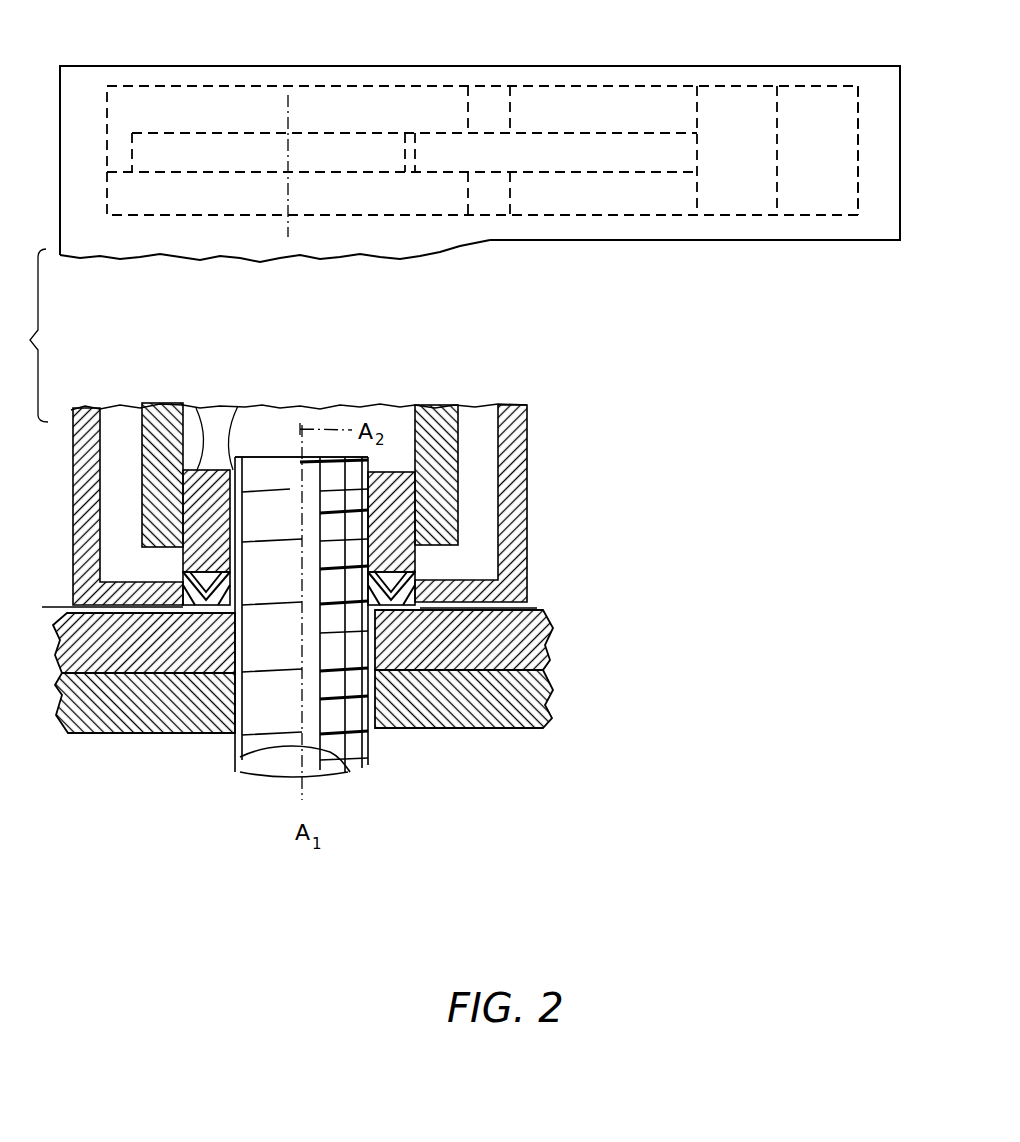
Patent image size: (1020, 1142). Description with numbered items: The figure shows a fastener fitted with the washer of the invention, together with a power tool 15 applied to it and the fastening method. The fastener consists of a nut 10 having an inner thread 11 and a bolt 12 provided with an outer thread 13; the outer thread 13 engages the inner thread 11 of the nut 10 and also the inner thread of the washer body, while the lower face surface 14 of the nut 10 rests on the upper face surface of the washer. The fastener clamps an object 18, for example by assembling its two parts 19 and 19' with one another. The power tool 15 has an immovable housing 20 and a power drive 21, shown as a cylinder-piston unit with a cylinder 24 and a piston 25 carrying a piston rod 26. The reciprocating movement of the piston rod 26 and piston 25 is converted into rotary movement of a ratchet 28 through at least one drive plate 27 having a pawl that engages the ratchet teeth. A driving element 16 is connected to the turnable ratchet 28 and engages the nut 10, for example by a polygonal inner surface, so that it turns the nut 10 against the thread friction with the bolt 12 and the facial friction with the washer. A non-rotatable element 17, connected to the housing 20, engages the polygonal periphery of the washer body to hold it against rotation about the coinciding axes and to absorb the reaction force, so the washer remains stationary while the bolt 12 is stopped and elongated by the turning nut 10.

The nut 10 is at (193, 406).
The inner thread 11 is at (248, 402).
The bolt 12 is at (355, 765).
The outer thread 13 is at (252, 492).
The lower face surface 14 is at (183, 574).
The power tool 15 is at (540, 535).
The driving element 16 is at (158, 405).
The non-rotatable element 17 is at (65, 415).
The object 18 is at (204, 768).
The part of the object 19 is at (304, 732).
The part of the object 19' is at (283, 640).
The housing 20 is at (463, 54).
The power drive 21 is at (711, 272).
The cylinder 24 is at (828, 86).
The piston 25 is at (735, 102).
The piston rod 26 is at (597, 140).
The drive plate 27 is at (326, 102).
The ratchet 28 is at (192, 150).